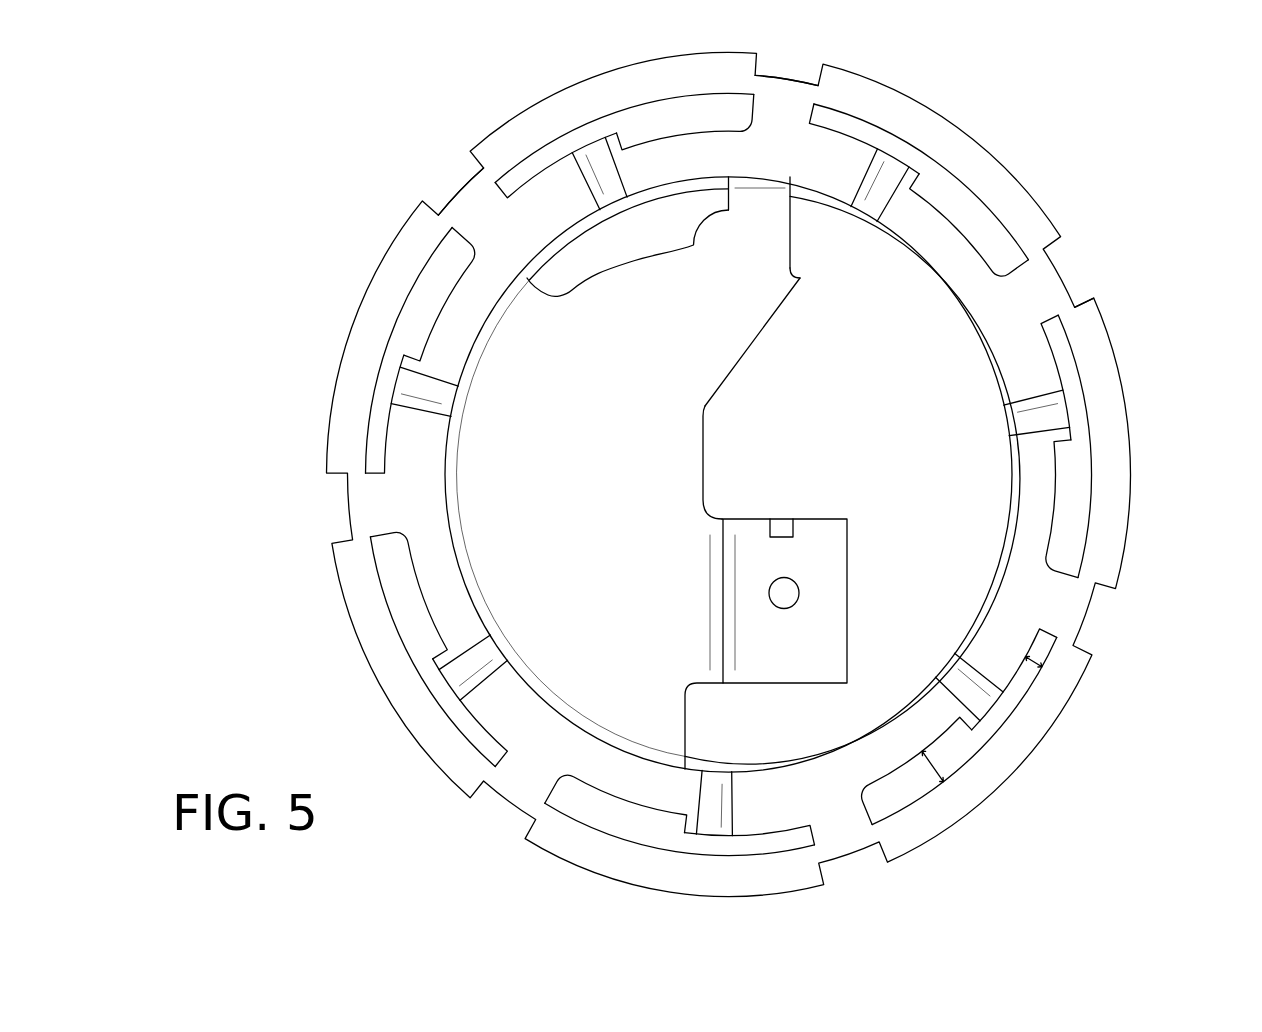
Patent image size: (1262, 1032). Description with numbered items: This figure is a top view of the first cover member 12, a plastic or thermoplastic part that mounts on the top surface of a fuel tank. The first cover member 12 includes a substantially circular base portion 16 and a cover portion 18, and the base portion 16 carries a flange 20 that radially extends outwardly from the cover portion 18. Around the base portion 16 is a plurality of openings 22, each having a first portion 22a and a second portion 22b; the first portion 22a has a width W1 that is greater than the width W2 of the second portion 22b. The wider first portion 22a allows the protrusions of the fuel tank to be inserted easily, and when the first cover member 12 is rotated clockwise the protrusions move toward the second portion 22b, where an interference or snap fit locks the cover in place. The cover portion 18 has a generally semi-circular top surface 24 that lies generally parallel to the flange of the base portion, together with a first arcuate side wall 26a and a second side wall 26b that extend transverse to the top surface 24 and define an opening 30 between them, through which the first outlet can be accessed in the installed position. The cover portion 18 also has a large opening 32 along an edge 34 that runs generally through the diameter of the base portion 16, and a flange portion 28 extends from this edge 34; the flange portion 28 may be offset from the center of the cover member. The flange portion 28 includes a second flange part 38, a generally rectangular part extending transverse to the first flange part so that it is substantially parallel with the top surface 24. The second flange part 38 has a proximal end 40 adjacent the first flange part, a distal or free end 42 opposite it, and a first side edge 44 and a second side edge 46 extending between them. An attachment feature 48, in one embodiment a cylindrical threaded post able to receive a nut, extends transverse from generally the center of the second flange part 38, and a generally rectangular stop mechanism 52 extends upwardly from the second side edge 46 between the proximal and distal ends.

The first cover member 12 is at (1020, 184).
The base portion 16 is at (1108, 322).
The cover portion 18 is at (680, 458).
The flange 20 is at (1120, 460).
The openings 22 is at (748, 479).
The first portion 22a is at (704, 112).
The second portion 22b is at (556, 148).
The top surface 24 is at (735, 333).
The first arcuate side wall 26a is at (762, 177).
The second side wall 26b is at (497, 248).
The flange portion 28 is at (848, 537).
The opening 30 is at (695, 250).
The large opening 32 is at (925, 273).
The edge 34 is at (802, 278).
The second flange part 38 is at (820, 525).
The proximal end 40 is at (738, 520).
The distal end 42 is at (848, 653).
The first side edge 44 is at (766, 685).
The second side edge 46 is at (750, 525).
The attachment feature 48 is at (785, 595).
The stop mechanism 52 is at (782, 517).
The width W1 is at (943, 782).
The width W2 is at (1042, 666).